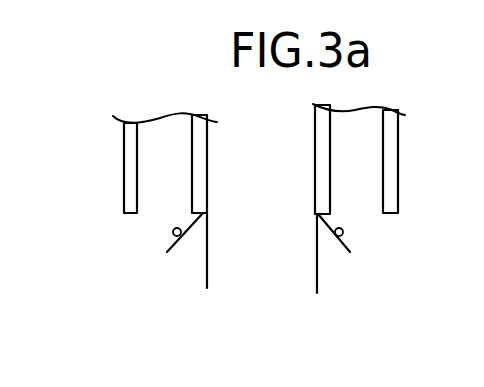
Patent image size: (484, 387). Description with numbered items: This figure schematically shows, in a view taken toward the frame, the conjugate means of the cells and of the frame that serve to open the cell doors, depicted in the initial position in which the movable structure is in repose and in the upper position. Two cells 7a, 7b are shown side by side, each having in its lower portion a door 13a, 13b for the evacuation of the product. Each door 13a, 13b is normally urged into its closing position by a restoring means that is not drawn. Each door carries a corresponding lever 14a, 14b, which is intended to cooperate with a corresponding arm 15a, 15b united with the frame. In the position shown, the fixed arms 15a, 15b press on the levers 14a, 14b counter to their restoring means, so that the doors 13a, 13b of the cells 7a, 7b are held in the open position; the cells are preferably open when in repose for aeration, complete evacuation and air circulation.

The cell 7a is at (114, 190).
The cell 7b is at (410, 178).
The door 13a is at (207, 289).
The door 13b is at (317, 287).
The lever 14a is at (167, 252).
The lever 14b is at (350, 252).
The arm 15a is at (173, 232).
The arm 15b is at (343, 232).